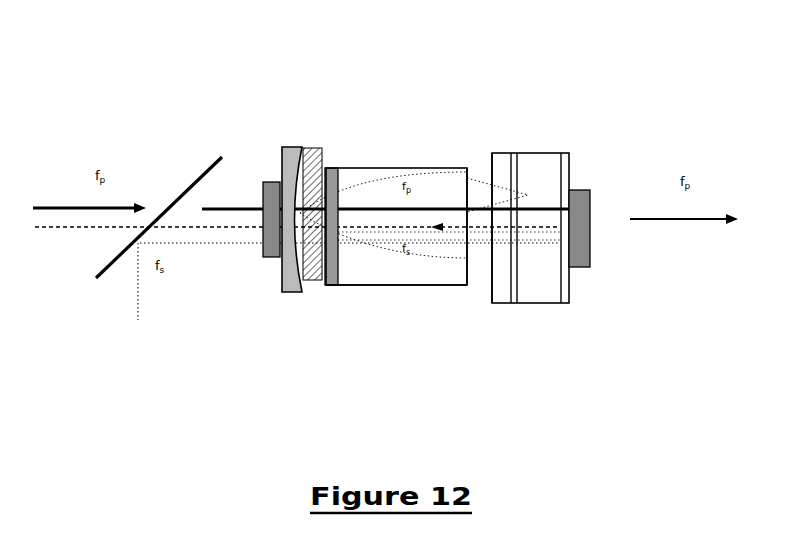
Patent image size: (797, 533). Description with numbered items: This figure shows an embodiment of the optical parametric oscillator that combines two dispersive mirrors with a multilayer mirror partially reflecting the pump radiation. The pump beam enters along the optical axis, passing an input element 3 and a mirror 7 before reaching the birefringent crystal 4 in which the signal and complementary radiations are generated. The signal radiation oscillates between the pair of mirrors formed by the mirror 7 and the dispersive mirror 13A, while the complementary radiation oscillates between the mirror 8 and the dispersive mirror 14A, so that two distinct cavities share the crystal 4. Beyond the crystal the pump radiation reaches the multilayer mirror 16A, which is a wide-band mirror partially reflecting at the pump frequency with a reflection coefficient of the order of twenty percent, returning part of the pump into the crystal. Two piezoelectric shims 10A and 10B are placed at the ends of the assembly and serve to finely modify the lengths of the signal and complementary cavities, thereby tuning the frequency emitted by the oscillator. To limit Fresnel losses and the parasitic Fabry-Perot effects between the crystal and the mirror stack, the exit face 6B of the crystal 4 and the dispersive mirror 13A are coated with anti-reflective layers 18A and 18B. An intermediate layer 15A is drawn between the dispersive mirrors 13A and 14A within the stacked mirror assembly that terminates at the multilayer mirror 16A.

The dichroic mirror 3 is at (206, 160).
The mirror 7 is at (282, 147).
The mirror 8 is at (330, 168).
The birefringent crystal 4 is at (398, 168).
The anti-reflective layer 18A is at (467, 168).
The anti-reflective layer 18B is at (492, 153).
The piezoelectric shim 10A is at (268, 258).
The piezoelectric shim 10B is at (578, 190).
The exit face 6B is at (465, 283).
The dispersive mirror 13A is at (500, 303).
The coating 15A is at (516, 303).
The dispersive mirror 14A is at (528, 303).
The multilayer mirror 16A is at (569, 292).